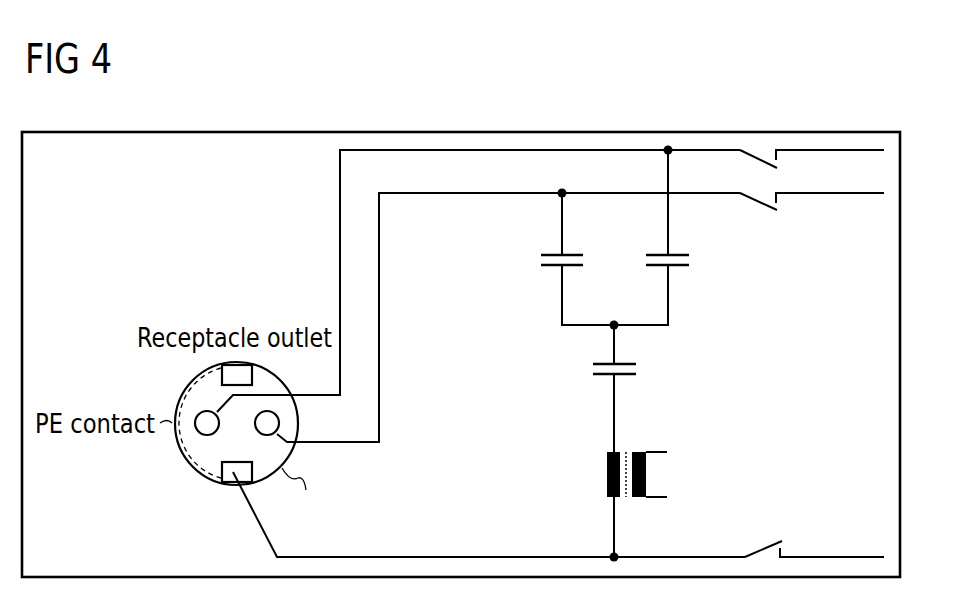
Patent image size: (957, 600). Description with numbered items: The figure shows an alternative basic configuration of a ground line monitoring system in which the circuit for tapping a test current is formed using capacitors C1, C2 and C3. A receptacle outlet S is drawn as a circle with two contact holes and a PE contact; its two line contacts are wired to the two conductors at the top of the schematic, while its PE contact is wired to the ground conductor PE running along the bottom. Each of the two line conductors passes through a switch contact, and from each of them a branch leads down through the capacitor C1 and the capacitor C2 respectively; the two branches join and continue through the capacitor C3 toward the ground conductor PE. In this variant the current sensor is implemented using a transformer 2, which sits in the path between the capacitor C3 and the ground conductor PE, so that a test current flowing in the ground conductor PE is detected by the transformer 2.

The transformer 2 is at (606, 474).
The capacitor C1 is at (689, 262).
The capacitor C2 is at (582, 262).
The capacitor C3 is at (635, 371).
The receptacle outlet S is at (298, 496).
The ground conductor PE is at (511, 541).